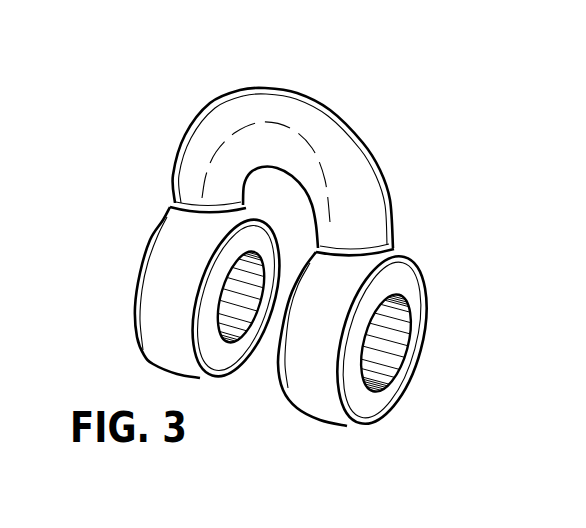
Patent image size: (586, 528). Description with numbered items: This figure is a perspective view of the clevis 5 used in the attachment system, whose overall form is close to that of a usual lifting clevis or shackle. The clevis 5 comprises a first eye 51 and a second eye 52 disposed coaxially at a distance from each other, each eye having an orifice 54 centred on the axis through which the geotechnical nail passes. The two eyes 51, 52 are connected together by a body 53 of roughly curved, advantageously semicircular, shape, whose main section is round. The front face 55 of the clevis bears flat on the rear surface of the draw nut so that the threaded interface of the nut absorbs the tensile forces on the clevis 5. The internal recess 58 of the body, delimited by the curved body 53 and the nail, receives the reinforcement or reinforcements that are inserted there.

The clevis 5 is at (283, 260).
The first eye 51 is at (393, 353).
The second eye 52 is at (143, 230).
The body 53 is at (282, 151).
The orifice 54 is at (390, 357).
The front face 55 is at (375, 400).
The internal recess 58 is at (281, 198).